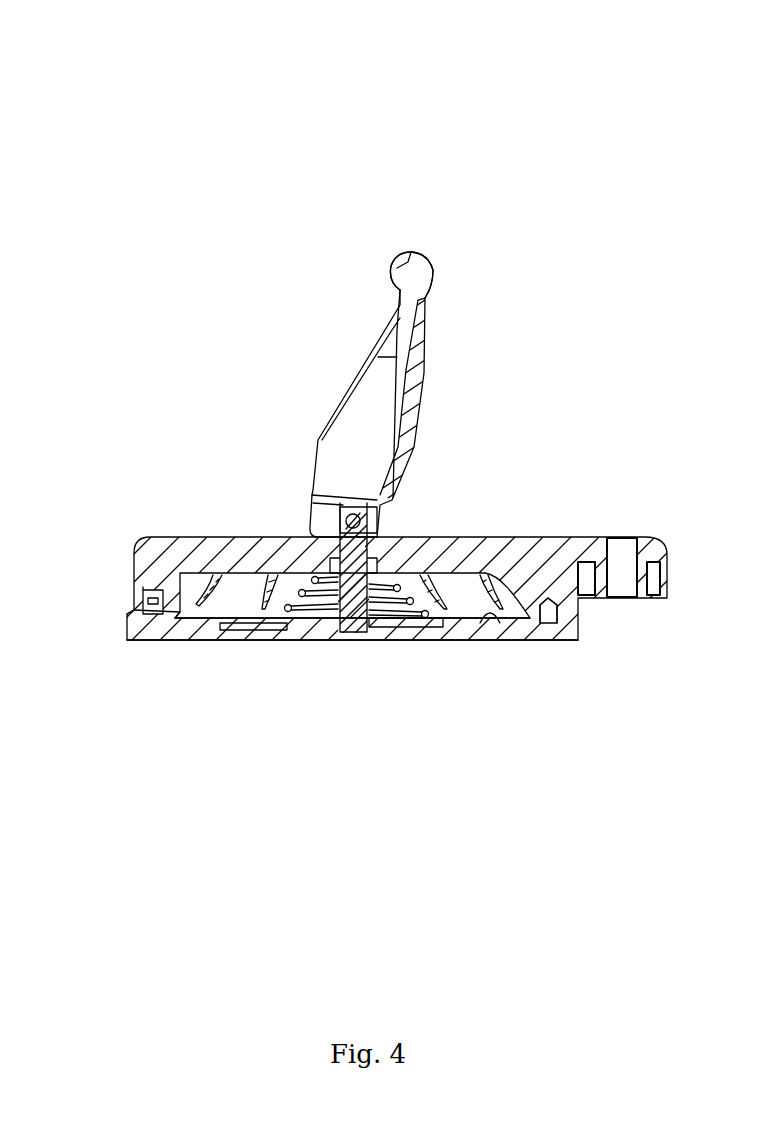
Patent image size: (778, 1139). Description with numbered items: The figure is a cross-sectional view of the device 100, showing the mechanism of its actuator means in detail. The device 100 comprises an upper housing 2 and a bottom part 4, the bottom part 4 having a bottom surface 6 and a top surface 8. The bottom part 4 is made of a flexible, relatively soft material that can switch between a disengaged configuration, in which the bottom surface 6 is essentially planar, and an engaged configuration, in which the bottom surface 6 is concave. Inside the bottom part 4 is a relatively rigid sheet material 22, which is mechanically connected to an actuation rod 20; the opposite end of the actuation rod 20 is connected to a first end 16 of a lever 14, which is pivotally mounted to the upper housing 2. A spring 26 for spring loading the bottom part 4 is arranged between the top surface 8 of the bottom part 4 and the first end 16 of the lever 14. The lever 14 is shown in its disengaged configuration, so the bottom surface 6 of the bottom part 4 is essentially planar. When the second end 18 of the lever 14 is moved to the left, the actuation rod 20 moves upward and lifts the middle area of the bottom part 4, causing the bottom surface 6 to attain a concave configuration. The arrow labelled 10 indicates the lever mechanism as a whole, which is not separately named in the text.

The device 100 is at (482, 135).
The upper housing 2 is at (162, 542).
The bottom part 4 is at (188, 640).
The bottom surface 6 is at (400, 643).
The top surface 8 is at (497, 637).
The actuating lever assembly 10 is at (246, 388).
The lever 14 is at (422, 390).
The first end 16 is at (380, 498).
The second end 18 is at (432, 271).
The actuation rod 20 is at (330, 640).
The rigid sheet material 22 is at (247, 640).
The spring 26 is at (280, 580).